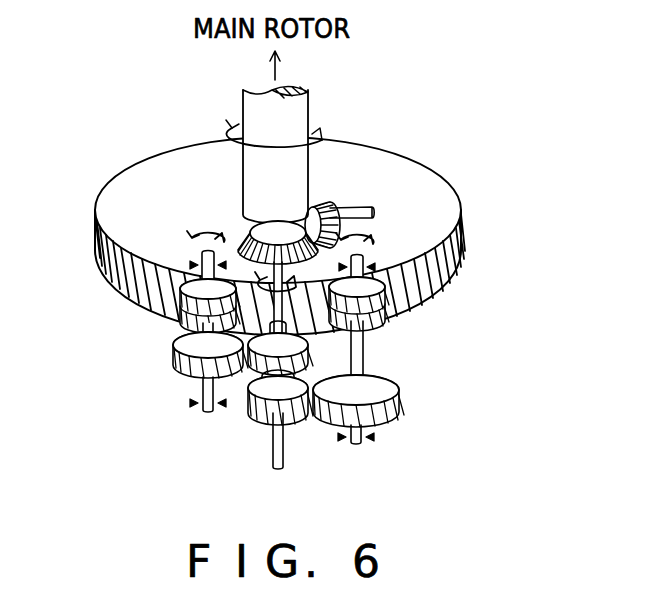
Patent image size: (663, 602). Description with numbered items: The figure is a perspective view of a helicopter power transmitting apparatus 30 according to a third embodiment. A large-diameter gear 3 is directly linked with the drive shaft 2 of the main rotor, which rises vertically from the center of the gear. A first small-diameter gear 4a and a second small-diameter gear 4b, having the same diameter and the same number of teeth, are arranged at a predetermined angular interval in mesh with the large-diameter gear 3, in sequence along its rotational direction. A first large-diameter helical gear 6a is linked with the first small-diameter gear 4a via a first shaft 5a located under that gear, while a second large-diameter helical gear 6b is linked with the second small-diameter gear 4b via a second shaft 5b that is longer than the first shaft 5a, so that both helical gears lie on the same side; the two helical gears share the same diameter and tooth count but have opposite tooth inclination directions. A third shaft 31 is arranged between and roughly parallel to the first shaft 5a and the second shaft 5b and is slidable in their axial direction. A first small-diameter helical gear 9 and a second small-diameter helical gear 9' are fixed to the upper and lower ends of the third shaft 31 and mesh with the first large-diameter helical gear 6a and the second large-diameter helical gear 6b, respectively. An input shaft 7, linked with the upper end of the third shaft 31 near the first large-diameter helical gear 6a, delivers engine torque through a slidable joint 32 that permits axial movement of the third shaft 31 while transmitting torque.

The drive shaft 2 is at (311, 92).
The large-diameter gear 3 is at (423, 182).
The first small-diameter gear 4a is at (186, 325).
The second small-diameter gear 4b is at (385, 318).
The first shaft 5a is at (180, 358).
The second shaft 5b is at (368, 348).
The first large-diameter helical gear 6a is at (175, 375).
The second large-diameter helical gear 6b is at (400, 395).
The input shaft 7 is at (243, 285).
The first small-diameter helical gear 9 is at (292, 348).
The second small-diameter helical gear 9' is at (241, 458).
The helicopter power transmitting apparatus 30 is at (520, 59).
The third shaft 31 is at (250, 398).
The slidable joint 32 is at (300, 338).